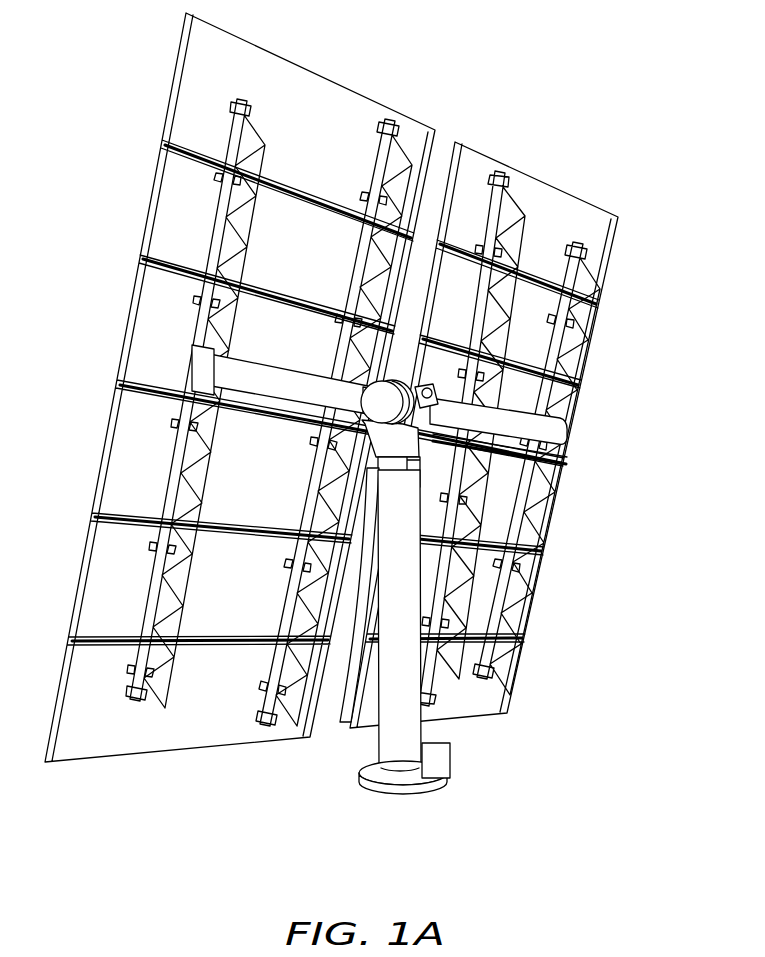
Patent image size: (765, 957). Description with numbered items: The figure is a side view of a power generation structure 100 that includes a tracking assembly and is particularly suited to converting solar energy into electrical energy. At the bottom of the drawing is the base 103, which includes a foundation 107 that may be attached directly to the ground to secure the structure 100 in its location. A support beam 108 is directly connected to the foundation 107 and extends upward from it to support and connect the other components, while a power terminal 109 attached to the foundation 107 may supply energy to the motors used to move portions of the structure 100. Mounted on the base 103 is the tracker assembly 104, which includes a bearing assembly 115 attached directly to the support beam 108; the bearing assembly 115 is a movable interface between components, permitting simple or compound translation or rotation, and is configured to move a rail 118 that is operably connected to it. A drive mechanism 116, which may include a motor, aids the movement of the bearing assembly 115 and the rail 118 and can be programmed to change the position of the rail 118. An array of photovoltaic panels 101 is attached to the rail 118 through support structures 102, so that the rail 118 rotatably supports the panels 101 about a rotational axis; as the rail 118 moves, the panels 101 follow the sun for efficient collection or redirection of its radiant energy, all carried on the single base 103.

The power generation structure 100 is at (106, 40).
The photovoltaic panels 101 is at (153, 292).
The support structures 102 is at (240, 125).
The base 103 is at (377, 703).
The tracker assembly 104 is at (537, 455).
The foundation 107 is at (377, 783).
The support beam 108 is at (402, 752).
The power terminal 109 is at (445, 765).
The bearing assembly 115 is at (440, 384).
The drive mechanism 116 is at (385, 463).
The rail 118 is at (267, 378).